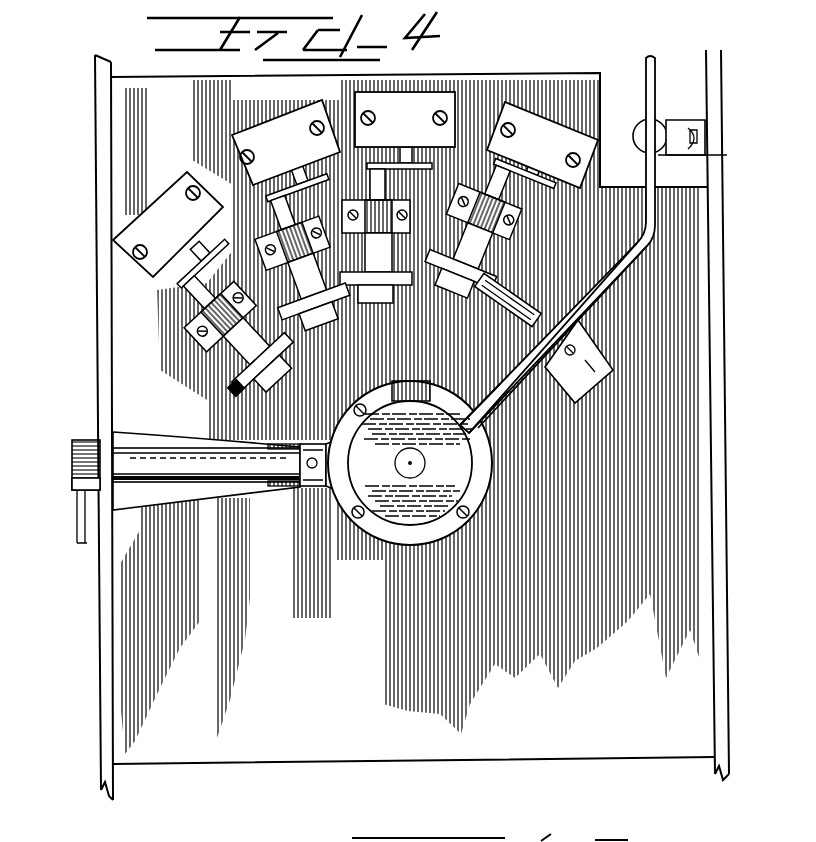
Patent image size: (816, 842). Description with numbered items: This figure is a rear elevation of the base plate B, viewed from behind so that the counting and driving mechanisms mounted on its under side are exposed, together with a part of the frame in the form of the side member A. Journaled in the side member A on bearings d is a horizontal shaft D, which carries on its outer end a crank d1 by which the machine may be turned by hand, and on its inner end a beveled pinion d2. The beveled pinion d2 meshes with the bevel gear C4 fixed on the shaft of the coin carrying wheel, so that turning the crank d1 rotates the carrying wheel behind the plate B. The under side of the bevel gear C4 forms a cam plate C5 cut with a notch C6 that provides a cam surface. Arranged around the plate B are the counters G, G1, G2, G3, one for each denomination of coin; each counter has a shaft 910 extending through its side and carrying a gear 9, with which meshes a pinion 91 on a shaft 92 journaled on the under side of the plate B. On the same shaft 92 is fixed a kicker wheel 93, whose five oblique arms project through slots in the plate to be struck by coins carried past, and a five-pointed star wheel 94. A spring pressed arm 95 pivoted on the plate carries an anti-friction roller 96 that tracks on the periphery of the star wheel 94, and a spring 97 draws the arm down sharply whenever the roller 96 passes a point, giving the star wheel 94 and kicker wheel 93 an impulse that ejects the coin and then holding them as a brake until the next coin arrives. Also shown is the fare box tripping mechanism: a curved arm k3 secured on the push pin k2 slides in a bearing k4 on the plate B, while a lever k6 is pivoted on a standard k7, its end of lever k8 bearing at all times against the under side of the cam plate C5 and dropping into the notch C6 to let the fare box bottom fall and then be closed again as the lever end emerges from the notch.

The side member A is at (103, 688).
The plate B is at (363, 731).
The horizontal shaft D is at (145, 448).
The crank d1 is at (77, 512).
The beveled pinion d2 is at (333, 488).
The bevel gear C4 is at (390, 492).
The cam plate C5 is at (400, 533).
The notch C6 is at (418, 382).
The counter G is at (555, 128).
The counter G1 is at (430, 108).
The counter G2 is at (273, 103).
The counter G3 is at (155, 225).
The gear 9 is at (226, 295).
The pinion 91 is at (262, 345).
The shaft 92 is at (490, 190).
The kicker wheel 93 is at (455, 180).
The star wheel 94 is at (440, 205).
The spring pressed arm 95 is at (517, 293).
The anti-friction roller 96 is at (440, 290).
The spring 97 is at (540, 302).
The shaft 910 is at (518, 167).
The bearing d is at (185, 398).
The push pin k2 is at (640, 132).
The curved arm k3 is at (655, 88).
The bearing k4 is at (705, 125).
The lever k6 is at (620, 278).
The standard k7 is at (560, 338).
The end of lever k8 is at (485, 403).